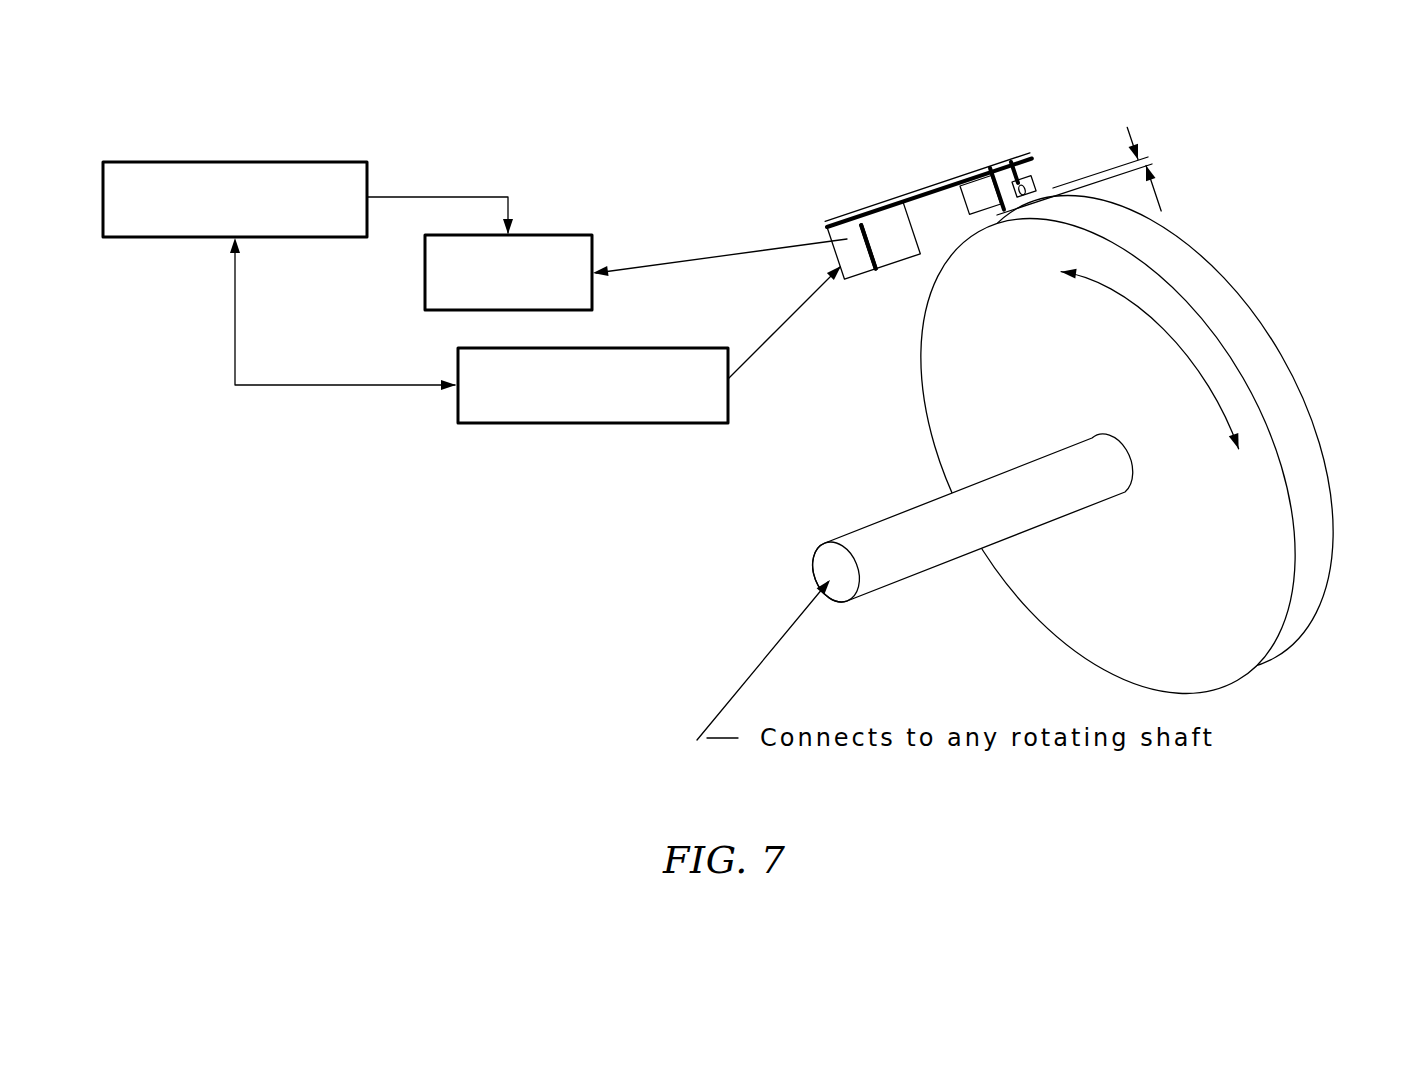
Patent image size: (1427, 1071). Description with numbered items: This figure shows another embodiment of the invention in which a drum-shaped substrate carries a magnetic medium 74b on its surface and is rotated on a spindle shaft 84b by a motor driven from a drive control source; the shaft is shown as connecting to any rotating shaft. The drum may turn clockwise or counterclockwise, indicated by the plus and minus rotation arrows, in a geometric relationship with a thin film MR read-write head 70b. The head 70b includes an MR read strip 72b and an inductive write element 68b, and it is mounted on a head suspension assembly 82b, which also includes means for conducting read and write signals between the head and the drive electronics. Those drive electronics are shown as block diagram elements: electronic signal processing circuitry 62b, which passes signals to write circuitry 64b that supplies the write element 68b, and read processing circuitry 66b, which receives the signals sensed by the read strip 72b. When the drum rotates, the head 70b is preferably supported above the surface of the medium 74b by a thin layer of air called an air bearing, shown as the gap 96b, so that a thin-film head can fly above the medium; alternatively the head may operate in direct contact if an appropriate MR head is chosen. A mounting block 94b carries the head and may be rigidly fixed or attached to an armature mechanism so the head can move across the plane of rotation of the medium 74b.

The electronic signal processing circuitry 62b is at (318, 161).
The write circuitry 64b is at (553, 424).
The read processing circuitry 66b is at (556, 236).
The write element 68b is at (992, 172).
The thin film MR read-write head 70b is at (1038, 178).
The MR read strip 72b is at (1012, 165).
The magnetic medium 74b is at (1270, 395).
The head suspension assembly 82b is at (898, 204).
The spindle shaft 84b is at (920, 550).
The mounting block 94b is at (891, 264).
The gap 96b is at (1102, 185).